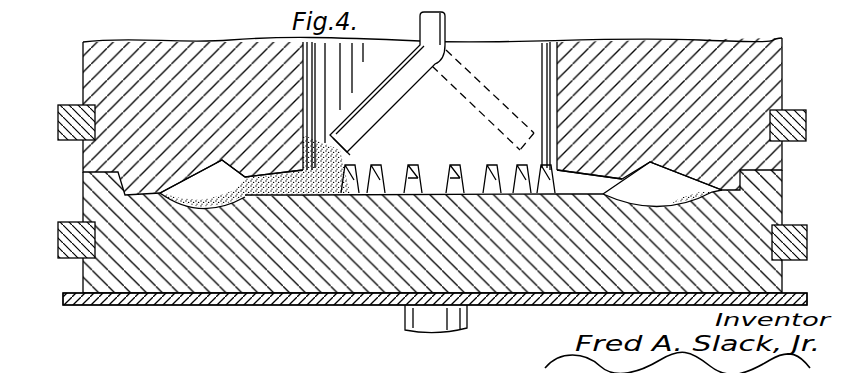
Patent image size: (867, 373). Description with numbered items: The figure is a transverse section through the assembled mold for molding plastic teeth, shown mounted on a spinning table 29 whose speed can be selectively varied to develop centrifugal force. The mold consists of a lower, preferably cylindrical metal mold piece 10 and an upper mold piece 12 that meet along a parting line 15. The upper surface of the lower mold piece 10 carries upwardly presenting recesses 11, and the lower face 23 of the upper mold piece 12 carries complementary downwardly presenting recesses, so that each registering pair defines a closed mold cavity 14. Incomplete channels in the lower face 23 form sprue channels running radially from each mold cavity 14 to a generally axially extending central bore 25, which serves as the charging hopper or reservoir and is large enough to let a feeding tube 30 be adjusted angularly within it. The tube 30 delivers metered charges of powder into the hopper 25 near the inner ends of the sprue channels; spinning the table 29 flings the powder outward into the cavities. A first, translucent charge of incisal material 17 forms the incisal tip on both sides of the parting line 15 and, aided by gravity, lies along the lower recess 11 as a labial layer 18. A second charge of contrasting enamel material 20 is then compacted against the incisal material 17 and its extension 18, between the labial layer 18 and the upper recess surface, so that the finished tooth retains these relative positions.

The lower mold piece 10 is at (145, 200).
The upwardly presenting recesses 11 is at (242, 200).
The upper mold piece 12 is at (213, 53).
The mold cavity 14 is at (217, 190).
The parting line 15 is at (142, 273).
The incisal material 17 is at (175, 197).
The labial layer 18 is at (200, 200).
The contrasting enamel material 20 is at (347, 165).
The lower face of the upper mold piece 23 is at (432, 130).
The central bore 25 is at (484, 100).
The spinning table 29 is at (320, 305).
The feeding tube 30 is at (446, 33).